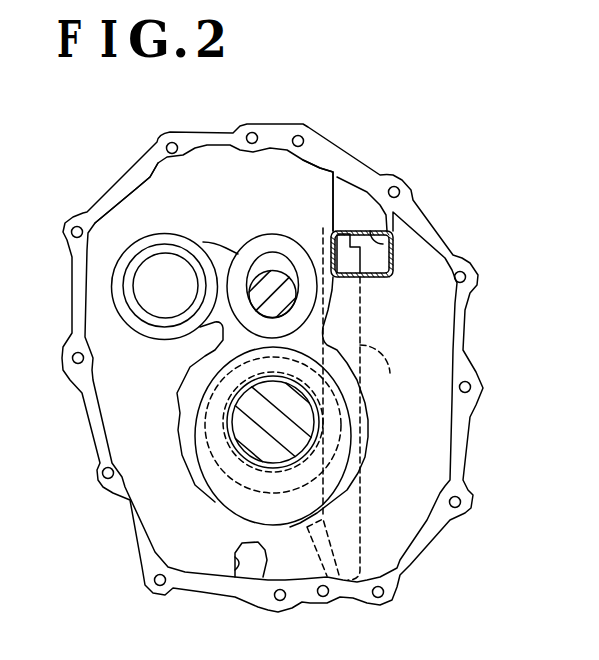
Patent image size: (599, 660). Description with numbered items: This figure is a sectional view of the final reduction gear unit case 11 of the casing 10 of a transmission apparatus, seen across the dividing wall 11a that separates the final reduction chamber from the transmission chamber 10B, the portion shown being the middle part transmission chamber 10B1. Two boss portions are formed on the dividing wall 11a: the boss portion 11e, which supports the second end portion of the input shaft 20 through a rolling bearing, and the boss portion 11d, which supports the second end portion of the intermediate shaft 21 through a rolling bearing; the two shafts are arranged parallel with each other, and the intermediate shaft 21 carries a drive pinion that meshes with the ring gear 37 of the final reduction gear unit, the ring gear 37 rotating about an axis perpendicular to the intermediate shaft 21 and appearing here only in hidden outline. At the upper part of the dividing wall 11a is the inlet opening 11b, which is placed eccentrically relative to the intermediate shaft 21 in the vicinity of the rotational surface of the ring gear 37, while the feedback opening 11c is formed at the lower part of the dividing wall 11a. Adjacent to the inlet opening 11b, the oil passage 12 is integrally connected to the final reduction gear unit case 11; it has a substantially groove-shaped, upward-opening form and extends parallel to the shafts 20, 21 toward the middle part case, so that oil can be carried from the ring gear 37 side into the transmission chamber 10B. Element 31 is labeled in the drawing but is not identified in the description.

The casing 10 is at (370, 161).
The transmission chamber 10B is at (302, 176).
The middle part transmission chamber 10B1 is at (128, 212).
The final reduction gear unit case 11 is at (467, 431).
The dividing wall 11a is at (410, 322).
The inlet opening 11b is at (393, 247).
The feedback opening 11c is at (235, 558).
The boss portion 11d is at (177, 413).
The boss portion 11e is at (258, 286).
The oil passage 12 is at (393, 269).
The input shaft 20 is at (251, 266).
The intermediate shaft 21 is at (258, 452).
The gear (hidden) 31 is at (205, 427).
The ring gear 37 is at (359, 460).